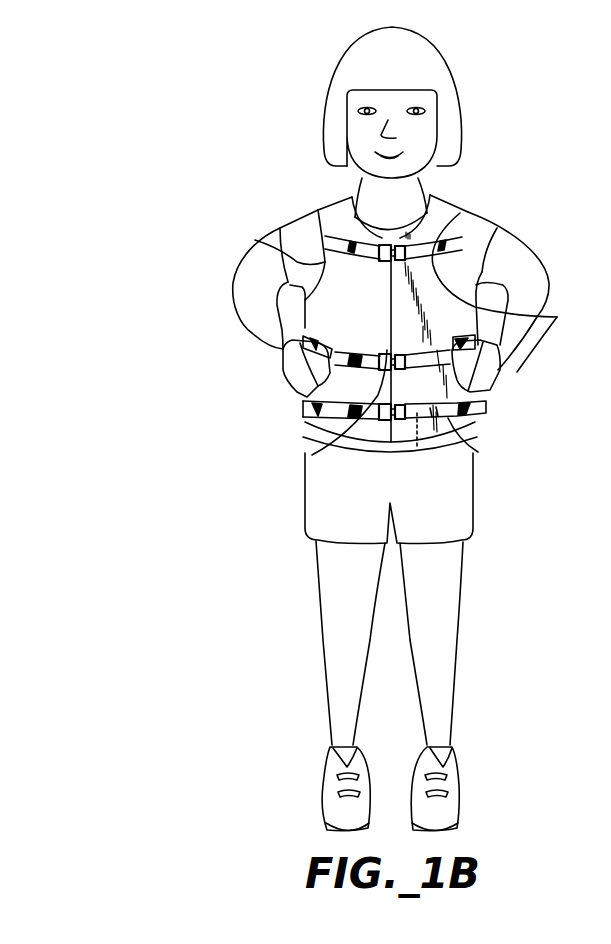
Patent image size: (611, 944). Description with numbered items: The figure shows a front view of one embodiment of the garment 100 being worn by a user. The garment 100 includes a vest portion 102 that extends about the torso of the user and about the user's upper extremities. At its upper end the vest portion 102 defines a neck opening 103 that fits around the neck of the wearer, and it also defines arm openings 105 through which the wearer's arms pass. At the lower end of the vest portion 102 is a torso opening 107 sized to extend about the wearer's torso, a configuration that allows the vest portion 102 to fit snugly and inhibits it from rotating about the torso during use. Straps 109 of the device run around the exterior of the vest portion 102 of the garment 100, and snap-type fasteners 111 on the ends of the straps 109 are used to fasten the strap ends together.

The garment 100 is at (266, 195).
The vest portion 102 is at (455, 197).
The neck opening 103 is at (352, 190).
The arm openings 105 is at (255, 240).
The torso opening 107 is at (478, 452).
The straps 109 is at (557, 317).
The snap-type fasteners 111 is at (308, 308).